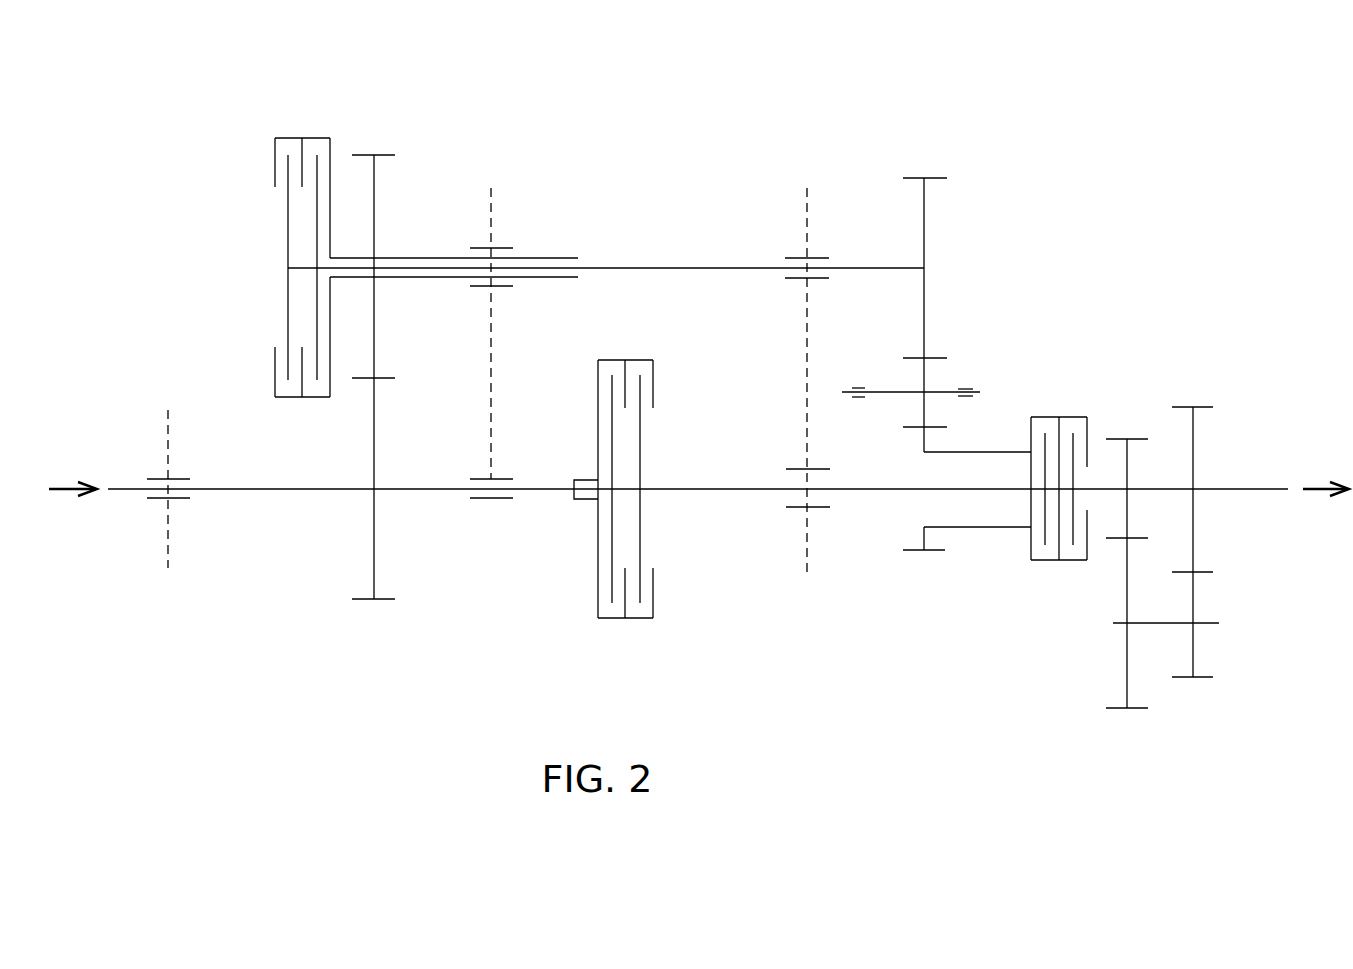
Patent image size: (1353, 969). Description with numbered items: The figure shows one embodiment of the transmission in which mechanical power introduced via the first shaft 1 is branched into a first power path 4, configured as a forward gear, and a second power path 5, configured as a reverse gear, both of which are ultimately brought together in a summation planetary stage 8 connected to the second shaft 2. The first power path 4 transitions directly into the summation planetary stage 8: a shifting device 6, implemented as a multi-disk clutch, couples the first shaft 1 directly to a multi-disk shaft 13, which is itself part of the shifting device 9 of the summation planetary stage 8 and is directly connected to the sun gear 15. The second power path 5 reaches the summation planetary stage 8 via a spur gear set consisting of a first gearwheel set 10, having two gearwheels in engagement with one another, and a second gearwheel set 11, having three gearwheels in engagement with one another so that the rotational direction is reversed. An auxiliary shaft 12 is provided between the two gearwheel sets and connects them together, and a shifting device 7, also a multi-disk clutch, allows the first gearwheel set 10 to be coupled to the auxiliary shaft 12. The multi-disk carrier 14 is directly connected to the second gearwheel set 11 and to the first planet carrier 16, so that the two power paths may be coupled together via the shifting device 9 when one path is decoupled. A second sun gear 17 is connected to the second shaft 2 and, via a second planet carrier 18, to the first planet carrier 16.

The first shaft 1 is at (228, 488).
The second shaft 2 is at (1258, 487).
The first power path 4 is at (773, 560).
The second power path 5 is at (546, 135).
The shifting device 6 is at (603, 620).
The shifting device 7 is at (282, 138).
The summation planetary stage 8 is at (1155, 564).
The shifting device 9 is at (1062, 430).
The first gearwheel set 10 is at (334, 595).
The second gearwheel set 11 is at (912, 166).
The auxiliary shaft 12 is at (667, 267).
The multi-disk shaft 13 is at (707, 490).
The multi-disk carrier 14 is at (1037, 415).
The sun gear 15 is at (1127, 473).
The first planet carrier 16 is at (1117, 625).
The second sun gear 17 is at (1210, 439).
The second planet carrier 18 is at (1208, 625).